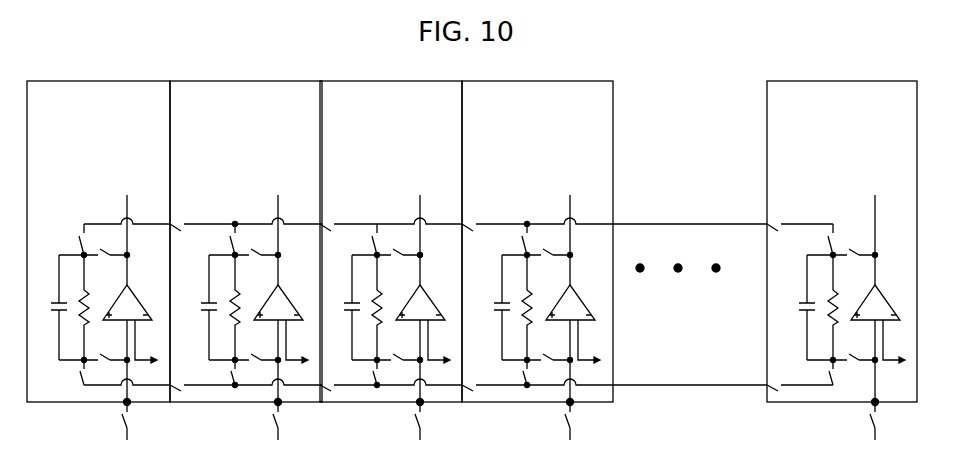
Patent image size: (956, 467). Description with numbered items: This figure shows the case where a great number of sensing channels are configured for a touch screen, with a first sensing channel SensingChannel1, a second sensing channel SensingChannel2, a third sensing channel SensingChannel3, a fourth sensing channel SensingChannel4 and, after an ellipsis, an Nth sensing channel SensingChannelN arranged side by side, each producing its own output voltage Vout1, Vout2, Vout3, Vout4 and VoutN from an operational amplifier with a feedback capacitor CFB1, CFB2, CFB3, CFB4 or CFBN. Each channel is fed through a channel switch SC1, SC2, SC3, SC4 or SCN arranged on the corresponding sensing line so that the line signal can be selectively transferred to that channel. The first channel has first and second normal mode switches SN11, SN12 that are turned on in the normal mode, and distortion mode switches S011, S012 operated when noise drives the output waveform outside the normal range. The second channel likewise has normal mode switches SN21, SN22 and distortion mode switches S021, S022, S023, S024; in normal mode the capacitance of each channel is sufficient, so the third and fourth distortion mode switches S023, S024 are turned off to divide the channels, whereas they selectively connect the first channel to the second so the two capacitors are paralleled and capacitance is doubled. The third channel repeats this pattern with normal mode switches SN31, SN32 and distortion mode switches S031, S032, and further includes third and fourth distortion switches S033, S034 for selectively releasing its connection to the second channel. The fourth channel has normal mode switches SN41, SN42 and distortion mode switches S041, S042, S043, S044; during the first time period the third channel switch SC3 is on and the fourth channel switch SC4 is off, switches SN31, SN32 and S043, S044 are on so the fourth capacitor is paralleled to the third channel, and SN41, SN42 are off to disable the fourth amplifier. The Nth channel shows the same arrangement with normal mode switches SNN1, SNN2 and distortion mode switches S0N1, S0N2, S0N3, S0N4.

The first sensing channel SensingChannel1 is at (98, 241).
The second sensing channel SensingChannel2 is at (246, 241).
The third sensing channel SensingChannel3 is at (391, 241).
The fourth sensing channel SensingChannel4 is at (537, 241).
The Nth sensing channel SensingChannelN is at (842, 241).
The output voltage of the first sensing channel Vout1 is at (125, 291).
The output voltage of the second sensing channel Vout2 is at (276, 291).
The output voltage of the third sensing channel Vout3 is at (418, 291).
The output voltage of the fourth sensing channel Vout4 is at (568, 291).
The output voltage of the Nth sensing channel VoutN is at (873, 291).
The second distortion mode switch of the first sensing channel S012 is at (68, 239).
The second normal mode switch of the first sensing channel SN12 is at (93, 261).
The feedback capacitor of the first sensing channel CFB1 is at (48, 307).
The first normal mode switch of the first sensing channel SN11 is at (93, 350).
The first distortion mode switch of the first sensing channel S011 is at (68, 372).
The first channel switch SC1 is at (136, 421).
The fourth distortion mode switch of the second sensing channel S024 is at (202, 219).
The third distortion mode switch of the second sensing channel S023 is at (202, 381).
The second distortion mode switch of the second sensing channel S022 is at (219, 239).
The second normal mode switch of the second sensing channel SN22 is at (243, 262).
The feedback capacitor of the second sensing channel CFB2 is at (197, 307).
The first normal mode switch of the second sensing channel SN21 is at (243, 350).
The first distortion mode switch of the second sensing channel S021 is at (219, 373).
The second channel switch SC2 is at (287, 421).
The fourth distortion switch of the third sensing channel S034 is at (348, 219).
The third distortion switch of the third sensing channel S033 is at (348, 381).
The second distortion mode switch of the third sensing channel S032 is at (362, 239).
The second normal mode switch of the third sensing channel SN32 is at (386, 262).
The feedback capacitor of the third sensing channel CFB3 is at (340, 307).
The first normal mode switch of the third sensing channel SN31 is at (386, 350).
The first distortion mode switch of the third sensing channel S031 is at (362, 373).
The third channel switch SC3 is at (429, 421).
The fourth distortion mode switch of the fourth sensing channel S044 is at (494, 219).
The third distortion mode switch of the fourth sensing channel S043 is at (494, 381).
The second distortion mode switch of the fourth sensing channel S042 is at (511, 239).
The second normal mode switch of the fourth sensing channel SN42 is at (536, 262).
The feedback capacitor of the fourth sensing channel CFB4 is at (487, 307).
The first normal mode switch of the fourth sensing channel SN41 is at (536, 350).
The first distortion mode switch of the fourth sensing channel S041 is at (512, 373).
The fourth channel switch SC4 is at (579, 421).
The fourth distortion mode switch of the Nth sensing channel S0N4 is at (800, 219).
The third distortion mode switch of the Nth sensing channel S0N3 is at (800, 381).
The second distortion mode switch of the Nth sensing channel S0N2 is at (817, 239).
The second normal mode switch of the Nth sensing channel SNN2 is at (841, 262).
The feedback capacitor of the Nth sensing channel CFBN is at (792, 307).
The first normal mode switch of the Nth sensing channel SNN1 is at (841, 350).
The first distortion mode switch of the Nth sensing channel S0N1 is at (818, 373).
The Nth channel switch SCN is at (884, 421).